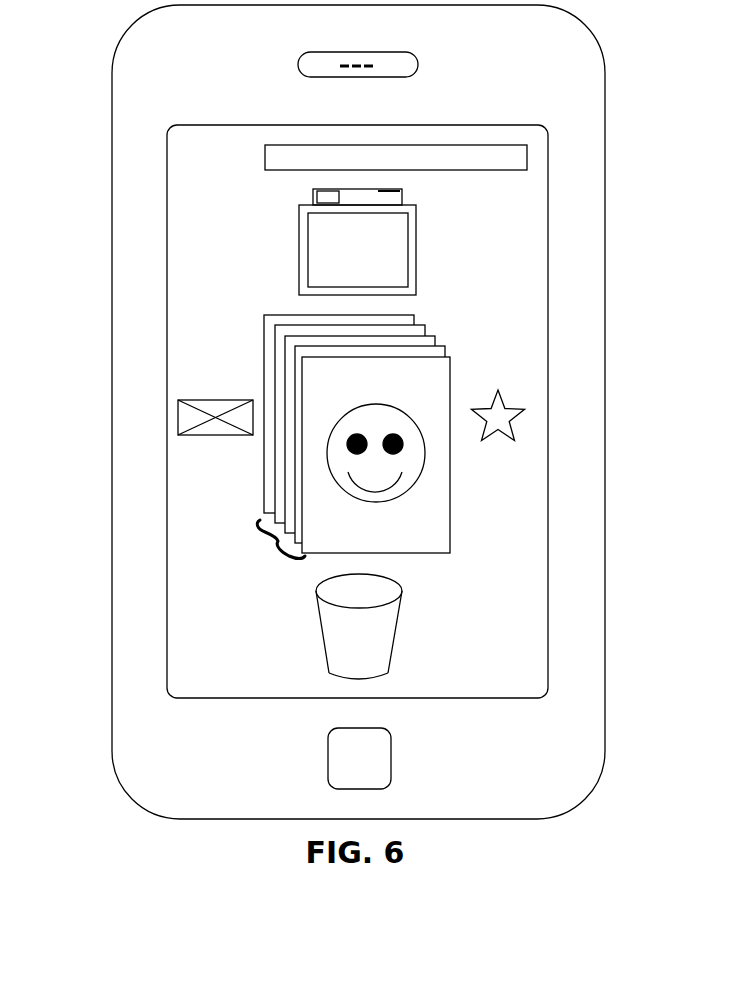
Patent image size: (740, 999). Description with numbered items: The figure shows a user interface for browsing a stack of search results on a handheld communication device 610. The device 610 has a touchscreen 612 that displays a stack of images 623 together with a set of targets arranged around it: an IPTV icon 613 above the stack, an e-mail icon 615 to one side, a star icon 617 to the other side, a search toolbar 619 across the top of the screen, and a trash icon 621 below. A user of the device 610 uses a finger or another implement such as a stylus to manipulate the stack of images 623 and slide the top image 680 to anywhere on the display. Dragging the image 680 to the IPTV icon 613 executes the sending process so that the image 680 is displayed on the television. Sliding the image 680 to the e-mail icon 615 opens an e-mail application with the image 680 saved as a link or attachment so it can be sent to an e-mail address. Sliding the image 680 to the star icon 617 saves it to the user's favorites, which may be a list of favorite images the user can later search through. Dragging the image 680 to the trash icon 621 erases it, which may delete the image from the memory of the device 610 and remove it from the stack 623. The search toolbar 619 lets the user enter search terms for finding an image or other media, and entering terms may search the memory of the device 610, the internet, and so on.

The handheld communication device 610 is at (122, 42).
The touchscreen 612 is at (233, 125).
The IPTV icon 613 is at (300, 240).
The e-mail icon 615 is at (223, 437).
The star icon 617 is at (487, 403).
The search toolbar 619 is at (443, 168).
The trash icon 621 is at (398, 618).
The stack of images 623 is at (278, 540).
The top image 680 is at (425, 470).